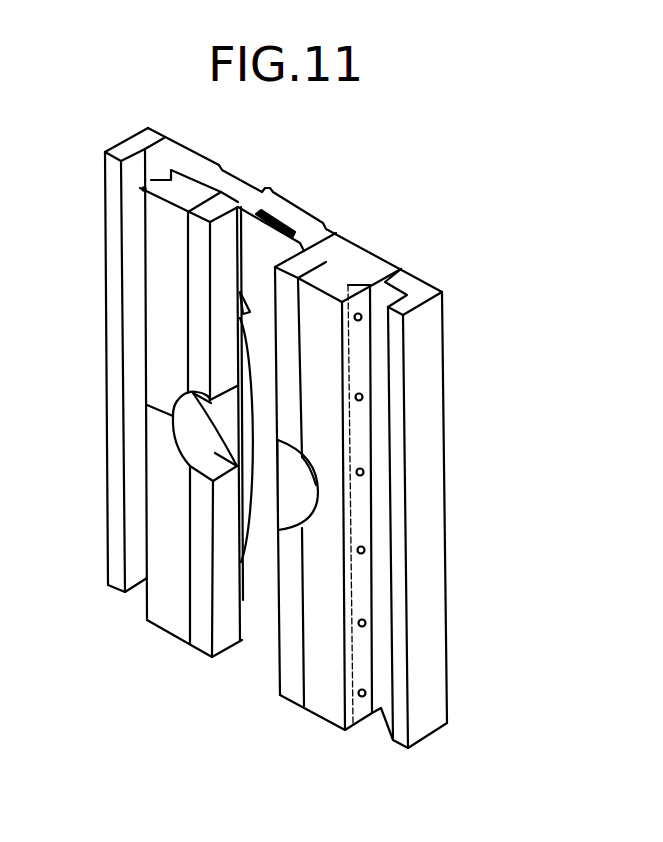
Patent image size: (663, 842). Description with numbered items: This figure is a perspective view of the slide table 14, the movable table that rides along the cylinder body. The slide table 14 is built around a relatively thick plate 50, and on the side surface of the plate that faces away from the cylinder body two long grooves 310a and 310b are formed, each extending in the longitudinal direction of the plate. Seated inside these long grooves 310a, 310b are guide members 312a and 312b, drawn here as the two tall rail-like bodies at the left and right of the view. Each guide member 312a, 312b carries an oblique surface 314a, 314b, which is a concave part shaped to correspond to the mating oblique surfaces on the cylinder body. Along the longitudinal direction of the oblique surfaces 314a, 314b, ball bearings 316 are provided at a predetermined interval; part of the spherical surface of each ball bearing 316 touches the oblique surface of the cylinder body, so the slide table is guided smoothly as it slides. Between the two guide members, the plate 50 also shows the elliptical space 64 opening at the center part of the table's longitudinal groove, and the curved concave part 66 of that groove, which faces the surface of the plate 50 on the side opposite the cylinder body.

The slide table 14 is at (336, 212).
The plate 50 is at (260, 653).
The elliptical space 64 is at (187, 440).
The curved concave part 66 is at (283, 487).
The long groove 310a is at (400, 306).
The long groove 310b is at (148, 127).
The guide member 312a is at (332, 267).
The guide member 312b is at (193, 188).
The oblique surface 314a is at (171, 168).
The oblique surface 314b is at (146, 192).
The ball bearings 316 is at (364, 319).